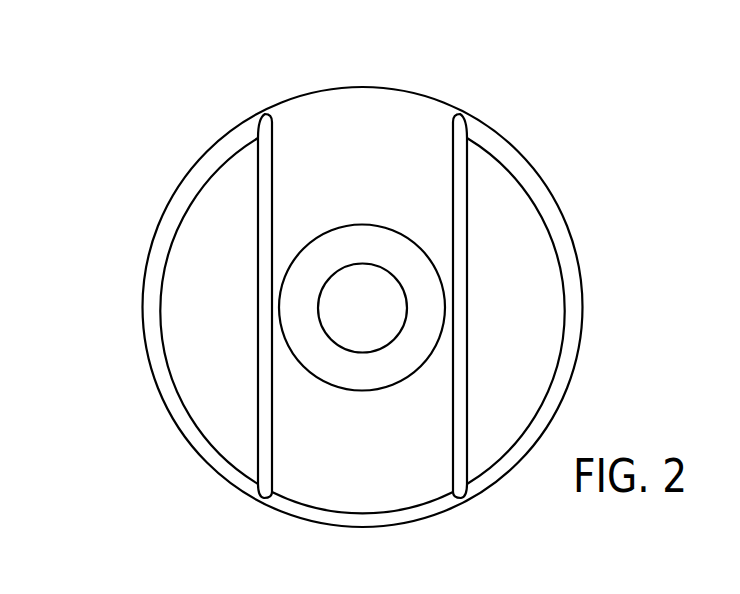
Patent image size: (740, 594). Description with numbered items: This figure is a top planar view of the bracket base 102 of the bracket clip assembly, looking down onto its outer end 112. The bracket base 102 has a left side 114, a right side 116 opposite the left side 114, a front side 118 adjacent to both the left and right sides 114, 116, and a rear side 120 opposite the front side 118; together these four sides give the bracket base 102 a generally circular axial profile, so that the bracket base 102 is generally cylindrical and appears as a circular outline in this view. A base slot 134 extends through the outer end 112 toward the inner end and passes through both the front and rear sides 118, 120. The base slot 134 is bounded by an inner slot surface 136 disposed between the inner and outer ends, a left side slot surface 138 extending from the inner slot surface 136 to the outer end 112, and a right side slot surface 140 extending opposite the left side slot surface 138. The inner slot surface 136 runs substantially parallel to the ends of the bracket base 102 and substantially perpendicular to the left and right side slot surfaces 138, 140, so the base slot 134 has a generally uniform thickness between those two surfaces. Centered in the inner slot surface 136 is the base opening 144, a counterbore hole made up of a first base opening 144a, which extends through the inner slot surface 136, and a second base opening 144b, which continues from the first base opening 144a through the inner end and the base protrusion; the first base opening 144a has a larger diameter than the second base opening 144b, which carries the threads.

The bracket base 102 is at (341, 296).
The outer end 112 is at (507, 208).
The left side 114 is at (148, 366).
The right side 116 is at (576, 365).
The front side 118 is at (362, 527).
The rear side 120 is at (331, 87).
The base slot 134 is at (420, 134).
The inner slot surface 136 is at (365, 125).
The left side slot surface 138 is at (272, 453).
The right side slot surface 140 is at (455, 424).
The base opening 144 is at (357, 295).
The first base opening 144a is at (278, 305).
The second base opening 144b is at (407, 313).